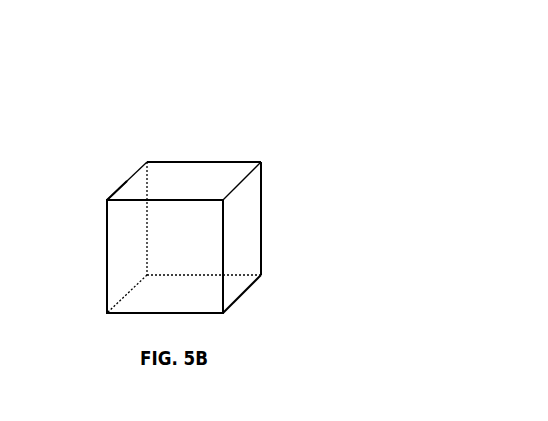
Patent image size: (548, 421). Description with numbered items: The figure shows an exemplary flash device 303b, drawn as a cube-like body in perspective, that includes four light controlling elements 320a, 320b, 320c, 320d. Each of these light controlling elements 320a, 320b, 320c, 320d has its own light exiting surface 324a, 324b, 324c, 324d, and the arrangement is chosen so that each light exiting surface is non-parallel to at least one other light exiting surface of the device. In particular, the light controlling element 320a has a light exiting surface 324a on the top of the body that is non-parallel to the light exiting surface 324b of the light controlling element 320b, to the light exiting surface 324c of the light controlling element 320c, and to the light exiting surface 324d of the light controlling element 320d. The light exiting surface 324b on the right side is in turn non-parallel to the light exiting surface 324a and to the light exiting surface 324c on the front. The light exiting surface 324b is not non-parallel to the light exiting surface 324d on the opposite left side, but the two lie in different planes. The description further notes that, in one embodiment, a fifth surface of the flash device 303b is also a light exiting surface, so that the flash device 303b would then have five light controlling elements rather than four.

The flash device 303b is at (181, 164).
The light controlling element 320a is at (155, 172).
The light controlling element 320b is at (240, 215).
The light controlling element 320c is at (125, 227).
The light controlling element 320d is at (124, 169).
The light exiting surface 324a is at (203, 170).
The light exiting surface 324b is at (250, 248).
The light exiting surface 324c is at (117, 263).
The light exiting surface 324d is at (106, 191).